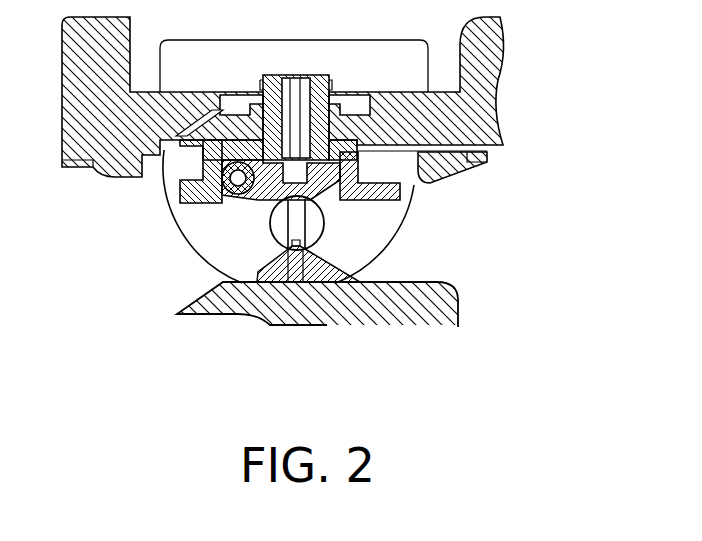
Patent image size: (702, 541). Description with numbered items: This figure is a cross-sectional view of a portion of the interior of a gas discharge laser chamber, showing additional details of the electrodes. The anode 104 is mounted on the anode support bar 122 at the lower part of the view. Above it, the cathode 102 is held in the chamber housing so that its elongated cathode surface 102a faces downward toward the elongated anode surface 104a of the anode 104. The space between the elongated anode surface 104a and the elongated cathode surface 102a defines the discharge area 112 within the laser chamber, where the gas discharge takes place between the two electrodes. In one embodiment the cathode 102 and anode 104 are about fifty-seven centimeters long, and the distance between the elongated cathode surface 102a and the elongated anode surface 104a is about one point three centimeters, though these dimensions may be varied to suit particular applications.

The cathode 102 is at (340, 207).
The elongated cathode surface 102a is at (272, 212).
The anode 104 is at (307, 262).
The elongated anode surface 104a is at (300, 238).
The discharge area 112 is at (271, 221).
The anode support bar 122 is at (459, 307).